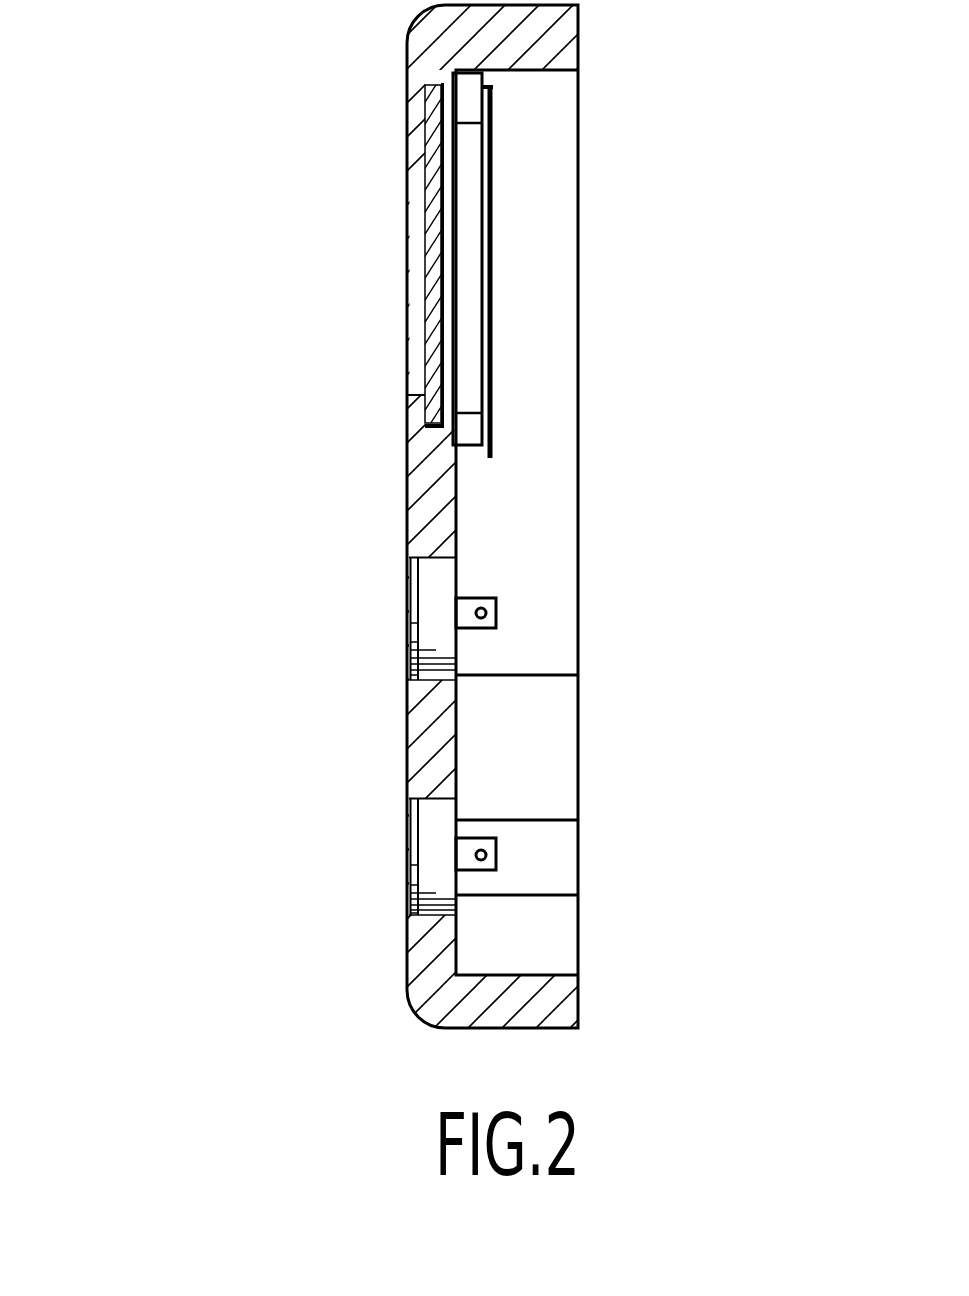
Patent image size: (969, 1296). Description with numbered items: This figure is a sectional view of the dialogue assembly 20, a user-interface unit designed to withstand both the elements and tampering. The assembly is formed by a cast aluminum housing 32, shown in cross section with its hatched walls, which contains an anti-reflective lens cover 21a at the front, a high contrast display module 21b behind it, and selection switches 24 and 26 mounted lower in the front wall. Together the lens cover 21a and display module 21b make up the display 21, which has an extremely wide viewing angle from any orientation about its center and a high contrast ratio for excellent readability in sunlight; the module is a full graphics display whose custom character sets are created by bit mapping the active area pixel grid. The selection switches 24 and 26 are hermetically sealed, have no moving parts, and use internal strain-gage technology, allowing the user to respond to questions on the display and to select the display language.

The dialogue assembly 20 is at (120, 37).
The display 21 is at (454, 233).
The anti-reflective lens cover 21a is at (418, 281).
The high contrast display module 21b is at (497, 278).
The selection switch 24 is at (410, 628).
The selection switch 26 is at (410, 860).
The cast aluminum housing 32 is at (560, 1035).